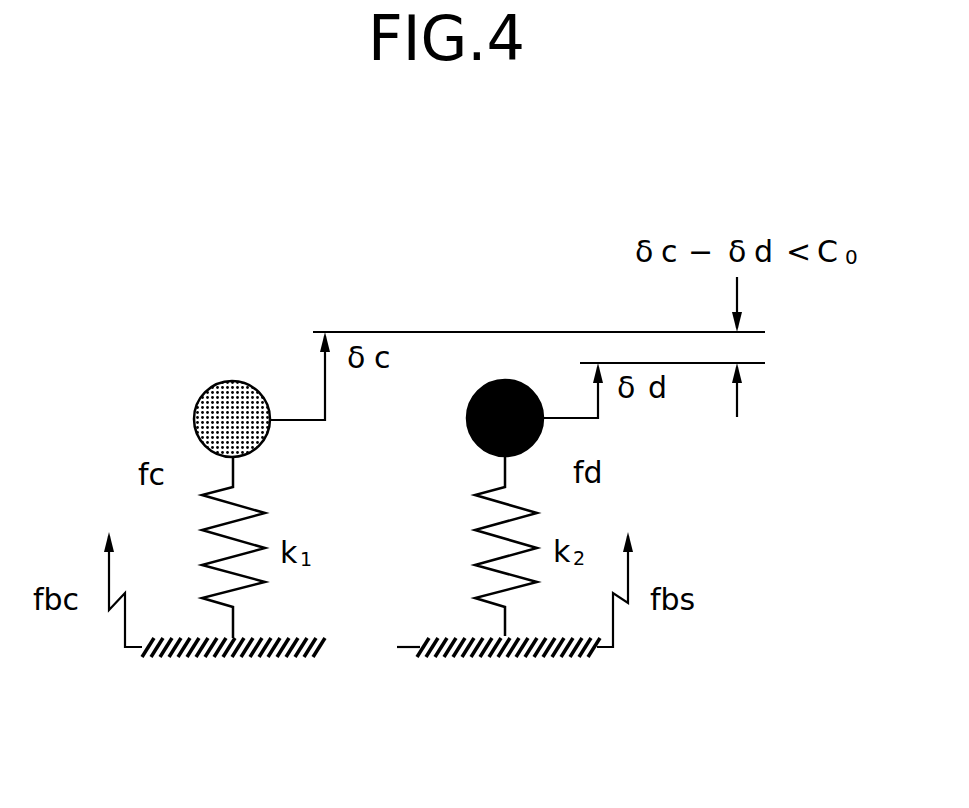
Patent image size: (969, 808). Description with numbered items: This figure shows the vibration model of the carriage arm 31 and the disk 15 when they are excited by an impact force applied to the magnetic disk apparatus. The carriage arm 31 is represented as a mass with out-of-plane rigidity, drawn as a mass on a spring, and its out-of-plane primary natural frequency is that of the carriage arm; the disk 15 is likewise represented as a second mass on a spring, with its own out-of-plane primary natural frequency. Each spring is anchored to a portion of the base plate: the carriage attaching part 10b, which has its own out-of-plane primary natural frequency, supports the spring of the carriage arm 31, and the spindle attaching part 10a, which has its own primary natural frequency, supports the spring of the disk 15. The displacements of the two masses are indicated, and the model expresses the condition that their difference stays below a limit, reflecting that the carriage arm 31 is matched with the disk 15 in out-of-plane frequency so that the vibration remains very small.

The carriage arm 31 is at (227, 400).
The disk 15 is at (495, 383).
The base portion supporting slider 10b is at (210, 658).
The base portion supporting disk 10a is at (488, 658).